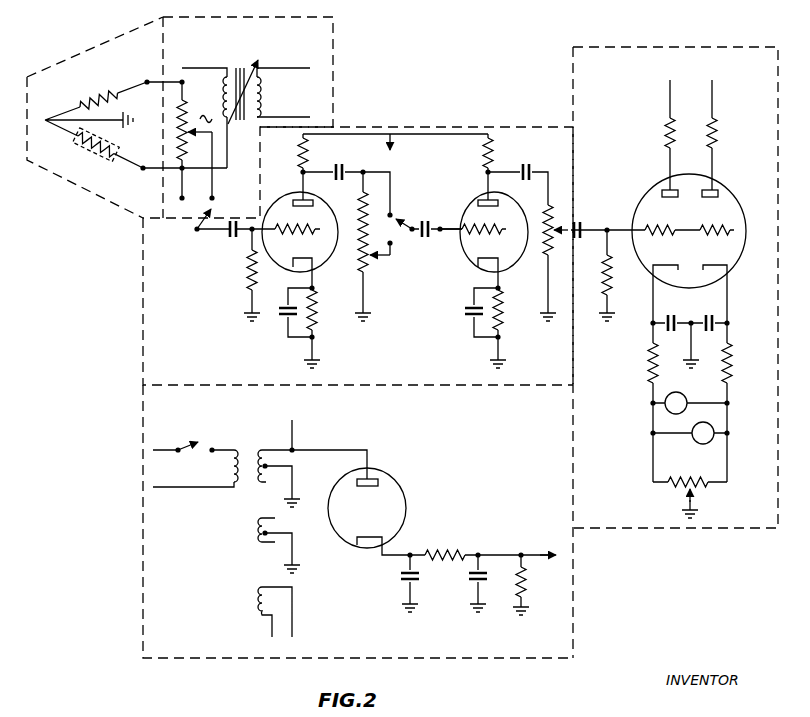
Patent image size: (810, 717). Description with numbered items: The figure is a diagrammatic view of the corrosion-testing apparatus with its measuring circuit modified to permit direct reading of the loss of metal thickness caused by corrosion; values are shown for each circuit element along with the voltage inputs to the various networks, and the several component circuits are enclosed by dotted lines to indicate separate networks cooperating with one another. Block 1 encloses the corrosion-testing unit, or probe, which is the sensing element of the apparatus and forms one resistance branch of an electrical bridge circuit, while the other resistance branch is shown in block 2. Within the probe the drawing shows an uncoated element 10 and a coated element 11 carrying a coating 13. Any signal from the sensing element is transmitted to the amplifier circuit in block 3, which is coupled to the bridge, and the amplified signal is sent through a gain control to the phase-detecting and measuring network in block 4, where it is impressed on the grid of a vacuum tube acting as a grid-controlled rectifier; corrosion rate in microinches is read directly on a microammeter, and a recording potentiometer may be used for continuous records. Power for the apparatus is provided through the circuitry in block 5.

The block enclosing corrosion-testing unit 1 is at (147, 60).
The block enclosing other resistance branch 2 is at (308, 60).
The amplifier circuit block 3 is at (177, 310).
The phase-detecting and measuring network block 4 is at (621, 100).
The power supply circuitry block 5 is at (447, 423).
The uncoated resistance wire 10 is at (110, 95).
The coated resistance wire 11 is at (118, 151).
The coating 13 is at (76, 147).